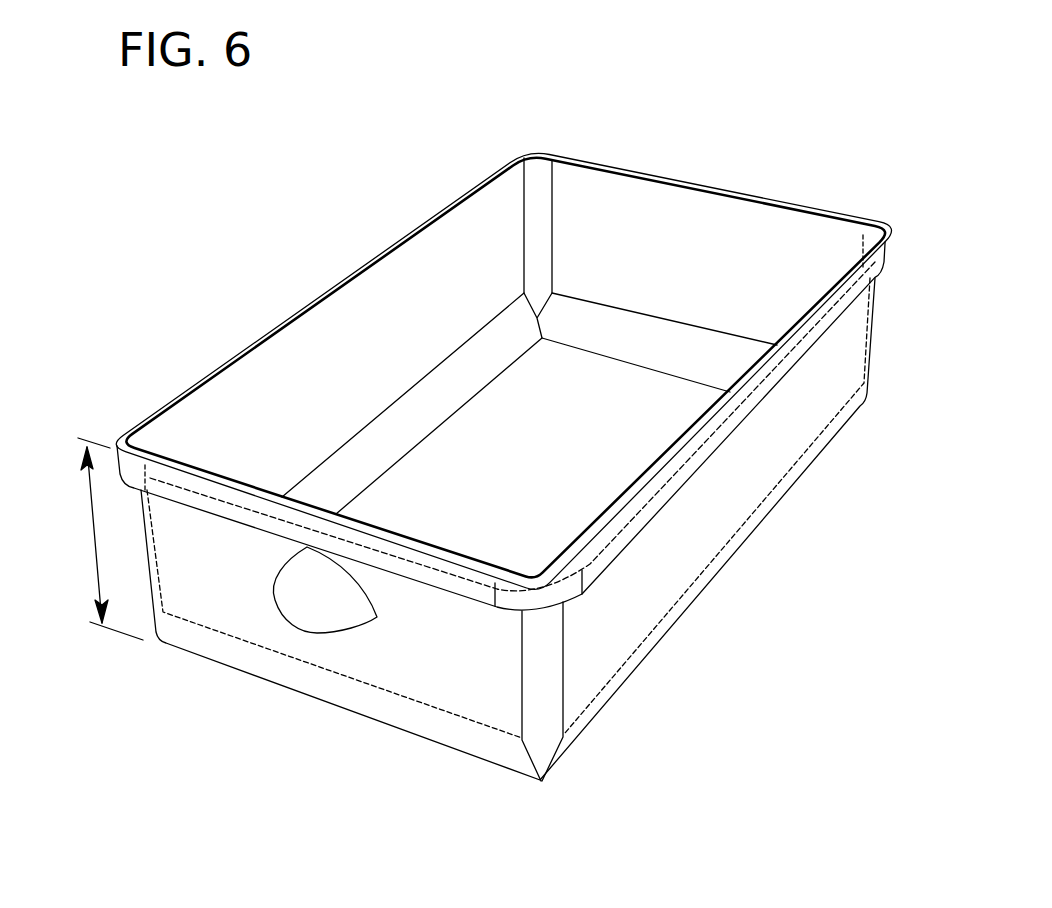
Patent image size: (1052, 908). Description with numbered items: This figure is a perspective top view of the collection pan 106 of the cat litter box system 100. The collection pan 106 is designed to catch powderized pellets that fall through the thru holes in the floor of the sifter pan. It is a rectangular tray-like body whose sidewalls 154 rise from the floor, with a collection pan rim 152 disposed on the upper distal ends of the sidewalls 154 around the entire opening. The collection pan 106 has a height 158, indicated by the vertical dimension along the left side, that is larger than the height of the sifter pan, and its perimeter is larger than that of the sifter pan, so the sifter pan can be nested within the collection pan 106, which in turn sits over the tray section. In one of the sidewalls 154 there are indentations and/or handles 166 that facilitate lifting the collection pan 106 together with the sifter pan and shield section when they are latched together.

The cat litter box system 100 is at (762, 130).
The collection pan 106 is at (270, 329).
The collection pan rim 152 is at (675, 183).
The sidewalls 154 is at (428, 288).
The height 158 is at (92, 531).
The indentations and/or handles 166 is at (303, 636).